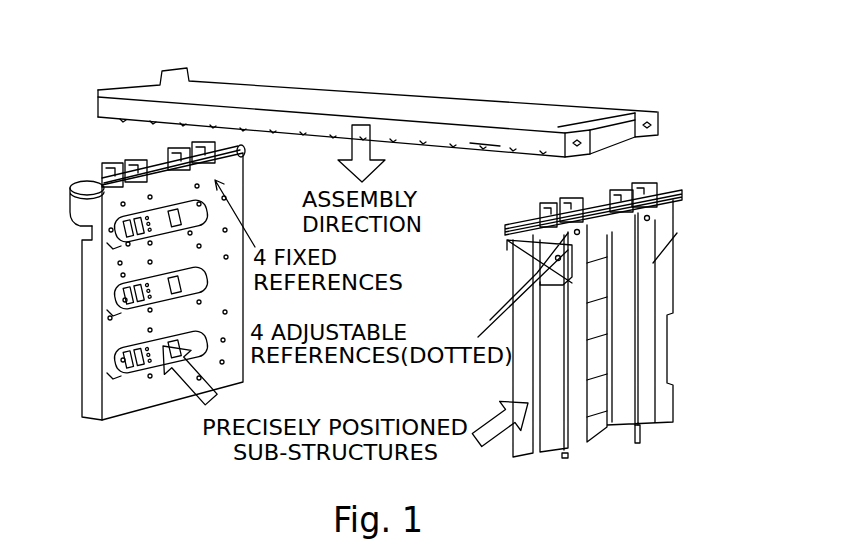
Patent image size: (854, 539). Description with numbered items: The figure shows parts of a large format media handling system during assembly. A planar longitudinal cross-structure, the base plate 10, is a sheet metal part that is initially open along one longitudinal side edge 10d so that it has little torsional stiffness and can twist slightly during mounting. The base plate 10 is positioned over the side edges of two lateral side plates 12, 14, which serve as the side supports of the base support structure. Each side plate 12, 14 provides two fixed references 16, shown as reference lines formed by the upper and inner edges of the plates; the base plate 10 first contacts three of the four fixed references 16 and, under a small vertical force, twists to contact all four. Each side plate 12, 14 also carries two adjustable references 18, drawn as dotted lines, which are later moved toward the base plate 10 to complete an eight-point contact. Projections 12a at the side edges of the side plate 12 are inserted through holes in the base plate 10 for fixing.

The base plate 10 is at (393, 102).
The longitudinal side edge 10d is at (491, 153).
The side plate 12 is at (645, 333).
The projection 12a is at (658, 185).
The side plate 14 is at (120, 340).
The fixed reference 16 is at (117, 183).
The adjustable reference 18 is at (103, 170).